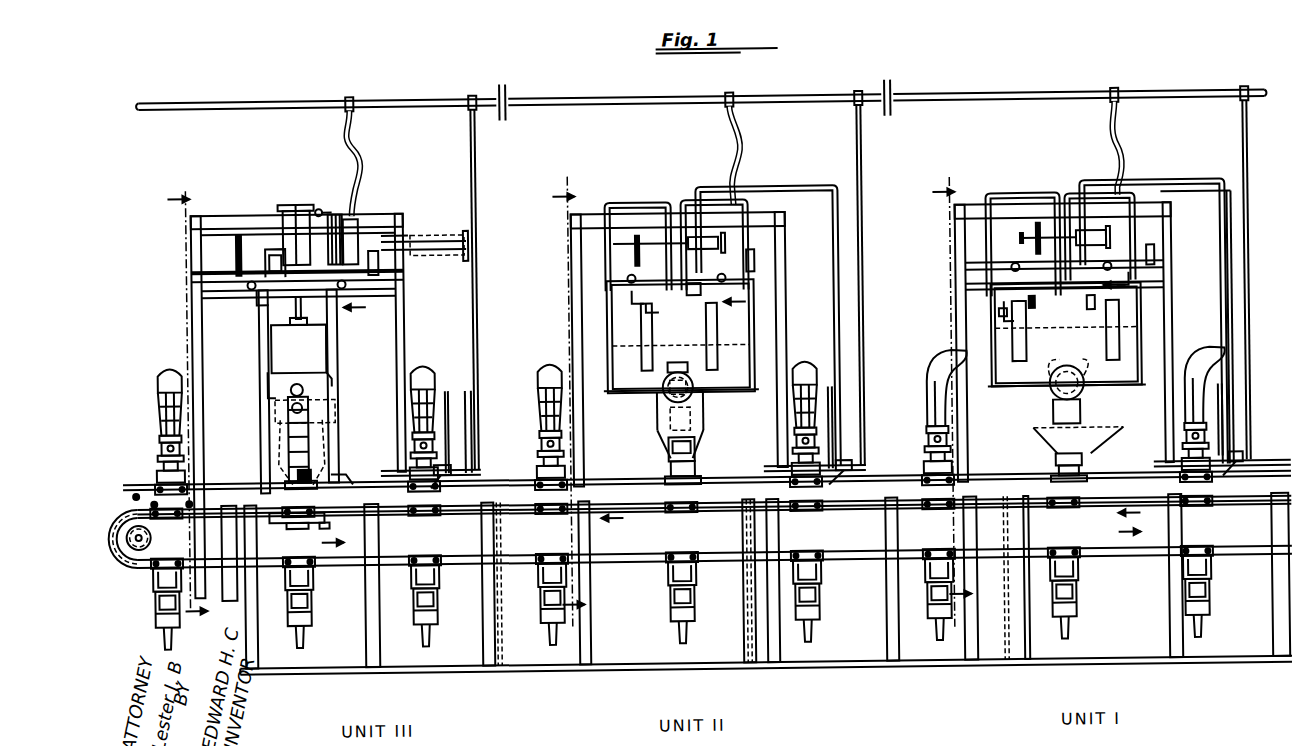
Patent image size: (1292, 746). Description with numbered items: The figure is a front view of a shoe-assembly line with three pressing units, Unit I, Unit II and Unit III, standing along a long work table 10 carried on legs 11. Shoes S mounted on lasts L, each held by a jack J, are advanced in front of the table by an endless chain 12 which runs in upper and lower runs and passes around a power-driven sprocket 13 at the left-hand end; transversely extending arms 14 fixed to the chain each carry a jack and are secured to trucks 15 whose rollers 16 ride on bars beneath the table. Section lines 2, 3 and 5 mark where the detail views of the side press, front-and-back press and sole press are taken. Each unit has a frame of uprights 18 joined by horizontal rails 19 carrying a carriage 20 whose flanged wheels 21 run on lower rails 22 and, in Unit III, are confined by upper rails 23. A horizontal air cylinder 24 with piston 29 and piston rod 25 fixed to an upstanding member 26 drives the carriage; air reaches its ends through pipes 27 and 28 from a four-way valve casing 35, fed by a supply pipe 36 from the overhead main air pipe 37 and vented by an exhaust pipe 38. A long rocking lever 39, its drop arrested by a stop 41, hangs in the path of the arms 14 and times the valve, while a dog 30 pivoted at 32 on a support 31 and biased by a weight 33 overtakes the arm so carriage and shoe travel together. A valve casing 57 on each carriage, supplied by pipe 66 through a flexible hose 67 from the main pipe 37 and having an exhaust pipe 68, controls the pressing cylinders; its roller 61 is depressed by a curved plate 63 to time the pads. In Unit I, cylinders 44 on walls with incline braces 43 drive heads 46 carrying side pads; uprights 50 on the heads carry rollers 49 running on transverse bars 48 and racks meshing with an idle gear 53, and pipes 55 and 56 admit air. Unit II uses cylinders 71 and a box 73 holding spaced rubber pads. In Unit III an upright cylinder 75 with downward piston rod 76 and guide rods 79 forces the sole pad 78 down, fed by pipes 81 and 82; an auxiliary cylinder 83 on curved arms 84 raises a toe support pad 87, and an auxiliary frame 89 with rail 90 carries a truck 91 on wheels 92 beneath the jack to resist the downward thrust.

The section line 2- 2 is at (952, 398).
The section line 3- 3 is at (568, 406).
The section line 5- 5 is at (187, 399).
The assembly table 10 is at (1270, 470).
The legs 11 is at (480, 648).
The chain 12 is at (336, 545).
The sprocket 13 is at (150, 532).
The transversely extending arms 14 is at (1155, 494).
The truck 15 is at (158, 477).
The rollers 16 is at (331, 484).
The uprights 18 is at (204, 341).
The horizontal rails 19 is at (248, 214).
The carriage 20 is at (262, 308).
The flanged wheels 21 is at (256, 294).
The lower rails 22 is at (203, 289).
The upper rails 23 is at (193, 270).
The air cylinder 24 is at (450, 238).
The piston rod 25 is at (392, 225).
The member 26 is at (1038, 255).
The pipe 27 is at (480, 276).
The pipe 28 is at (480, 300).
The piston 29 is at (428, 238).
The dog 30 is at (1096, 493).
The support 31 is at (1064, 279).
The pivot 32 is at (696, 472).
The weight 33 is at (670, 458).
The four-way valve casing 35 is at (847, 478).
The pressure supply pipe 36 is at (480, 206).
The main air pressure pipe 37 is at (430, 90).
The exhaust pipe 38 is at (472, 412).
The rocking lever 39 is at (395, 467).
The stop 41 is at (1007, 326).
The incline braces 43 is at (1001, 322).
The air operated cylinder 44 is at (1062, 368).
The metal head 46 is at (1033, 440).
The transverse bars 48 is at (643, 336).
The rollers 49 is at (655, 314).
The uprights 50 is at (643, 350).
The idle gear 53 is at (1074, 328).
The pipes 55 is at (610, 338).
The pipes 56 is at (756, 370).
The valve casing 57 is at (692, 303).
The offset roller 61 is at (679, 278).
The plate 63 is at (756, 260).
The pipe 66 is at (362, 220).
The flexible hose 67 is at (366, 162).
The exhaust pipe 68 is at (238, 258).
The cylinders 71 is at (666, 400).
The box 73 is at (657, 445).
The compressed air cylinder 75 is at (285, 212).
The piston rod 76 is at (299, 349).
The sole pressing pad 78 is at (328, 335).
The rods 79 is at (295, 224).
The pipe 81 is at (330, 206).
The pipe 82 is at (268, 250).
The auxiliary cylinder 83 is at (336, 416).
The curved arms 84 is at (333, 362).
The toe support pad 87 is at (304, 384).
The auxiliary supporting frame 89 is at (348, 472).
The rail 90 is at (319, 536).
The truck 91 is at (294, 536).
The wheels 92 is at (289, 529).
The shoe S is at (158, 397).
The last L is at (160, 436).
The jack J is at (157, 447).